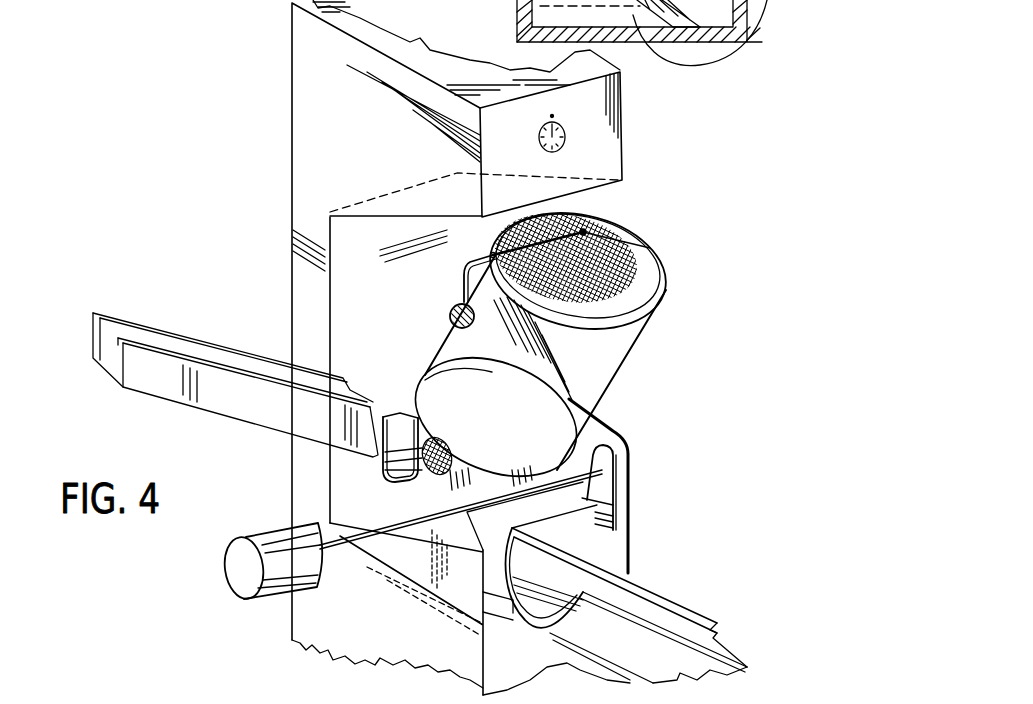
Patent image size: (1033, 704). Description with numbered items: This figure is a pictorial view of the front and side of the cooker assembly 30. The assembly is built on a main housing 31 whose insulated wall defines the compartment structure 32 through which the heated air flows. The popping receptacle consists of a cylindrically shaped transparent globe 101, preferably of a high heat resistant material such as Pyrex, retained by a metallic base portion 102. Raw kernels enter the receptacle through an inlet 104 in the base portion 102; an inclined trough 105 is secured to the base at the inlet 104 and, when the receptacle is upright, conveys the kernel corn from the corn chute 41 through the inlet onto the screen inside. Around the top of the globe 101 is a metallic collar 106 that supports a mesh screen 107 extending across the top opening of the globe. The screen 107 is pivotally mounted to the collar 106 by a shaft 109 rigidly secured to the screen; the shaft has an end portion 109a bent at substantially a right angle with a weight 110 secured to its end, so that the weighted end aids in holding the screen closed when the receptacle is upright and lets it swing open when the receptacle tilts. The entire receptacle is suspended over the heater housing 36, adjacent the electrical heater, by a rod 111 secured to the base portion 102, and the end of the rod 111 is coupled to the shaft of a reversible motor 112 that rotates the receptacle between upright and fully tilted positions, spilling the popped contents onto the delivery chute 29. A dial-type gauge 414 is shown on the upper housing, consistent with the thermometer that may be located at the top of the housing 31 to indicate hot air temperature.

The delivery chute 29 is at (667, 613).
The cooker assembly 30 is at (250, 108).
The main housing 31 is at (352, 125).
The compartment housing structure 32 is at (587, 190).
The heater housing 36 is at (567, 500).
The corn chute 41 is at (162, 332).
The transparent globe 101 is at (590, 372).
The metallic base portion 102 is at (438, 497).
The inlet 104 is at (458, 393).
The inclined trough 105 is at (383, 412).
The metallic collar 106 is at (640, 312).
The mesh screen 107 is at (650, 257).
The shaft 109 is at (588, 218).
The end portion 109a is at (466, 278).
The weight 110 is at (451, 330).
The rod 111 is at (332, 550).
The reversible motor 112 is at (233, 551).
The timer dial 414 is at (565, 137).